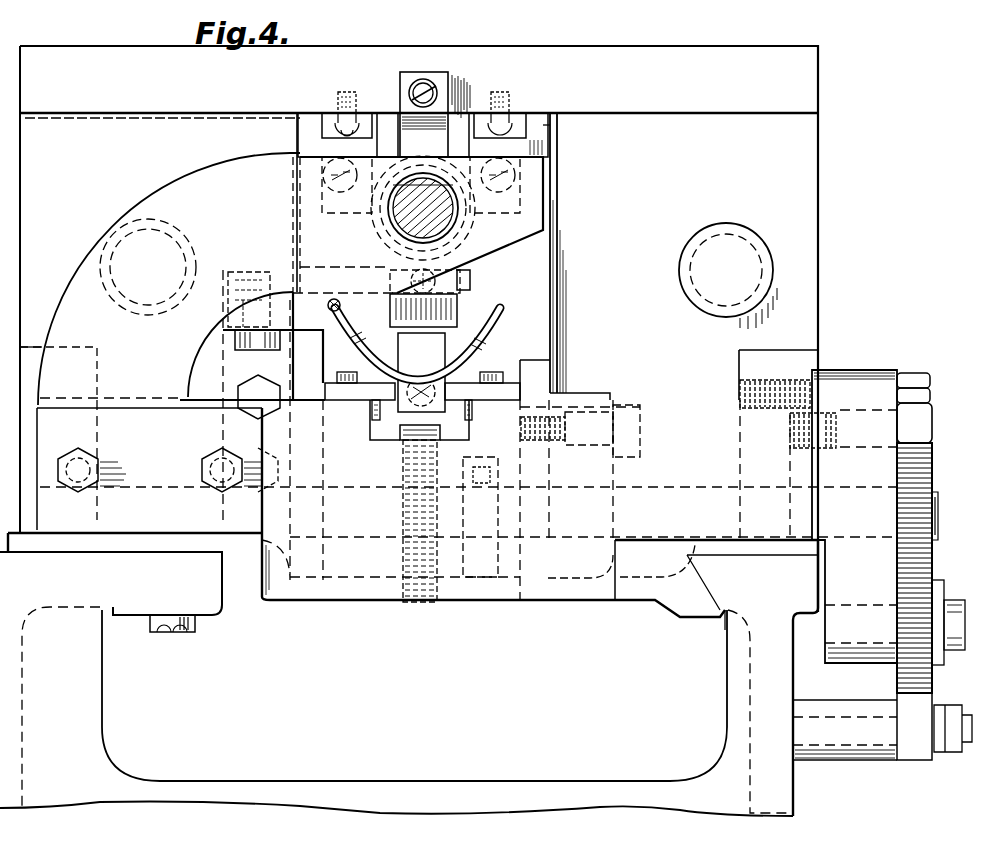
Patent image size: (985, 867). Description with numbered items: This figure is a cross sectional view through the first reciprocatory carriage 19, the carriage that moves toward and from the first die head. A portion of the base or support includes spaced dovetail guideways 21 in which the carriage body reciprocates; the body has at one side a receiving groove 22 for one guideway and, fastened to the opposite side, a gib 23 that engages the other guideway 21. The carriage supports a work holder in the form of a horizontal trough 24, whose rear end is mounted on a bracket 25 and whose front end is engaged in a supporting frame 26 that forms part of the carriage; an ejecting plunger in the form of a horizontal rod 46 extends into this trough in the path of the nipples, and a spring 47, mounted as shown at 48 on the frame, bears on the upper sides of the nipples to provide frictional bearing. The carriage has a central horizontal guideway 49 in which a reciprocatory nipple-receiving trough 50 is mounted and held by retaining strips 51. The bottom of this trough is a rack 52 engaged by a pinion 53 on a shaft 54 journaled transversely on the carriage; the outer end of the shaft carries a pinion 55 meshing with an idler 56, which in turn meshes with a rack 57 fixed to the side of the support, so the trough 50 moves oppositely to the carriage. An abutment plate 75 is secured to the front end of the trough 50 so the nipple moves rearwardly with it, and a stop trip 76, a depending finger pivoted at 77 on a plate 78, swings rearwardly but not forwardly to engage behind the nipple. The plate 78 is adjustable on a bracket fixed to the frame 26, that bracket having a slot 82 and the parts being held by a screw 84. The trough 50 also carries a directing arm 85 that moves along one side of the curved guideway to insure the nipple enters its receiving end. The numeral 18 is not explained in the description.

The frame side 18 is at (10, 278).
The reciprocatory carriage 19 is at (822, 240).
The guideways 21 is at (147, 553).
The receiving groove 22 is at (691, 585).
The gib 23 is at (207, 597).
The horizontal trough 24 is at (421, 225).
The bracket 25 is at (160, 259).
The supporting frame 26 is at (545, 282).
The horizontal rod 46 is at (395, 228).
The spring 47 is at (420, 147).
The spring mounting 48 is at (428, 96).
The central horizontal guideway 49 is at (373, 410).
The nipple-receiving trough 50 is at (485, 367).
The retaining strips 51 is at (362, 380).
The rack 52 is at (432, 437).
The pinion 53 is at (408, 512).
The shaft 54 is at (658, 487).
The pinion 55 is at (913, 487).
The idler 56 is at (913, 577).
The rack 57 is at (910, 703).
The abutment plate 75 is at (410, 342).
The stop trip 76 is at (456, 301).
The pivot 77 is at (470, 277).
The plate 78 is at (336, 268).
The slot 82 is at (230, 376).
The screw 84 is at (256, 352).
The directing arm 85 is at (328, 310).